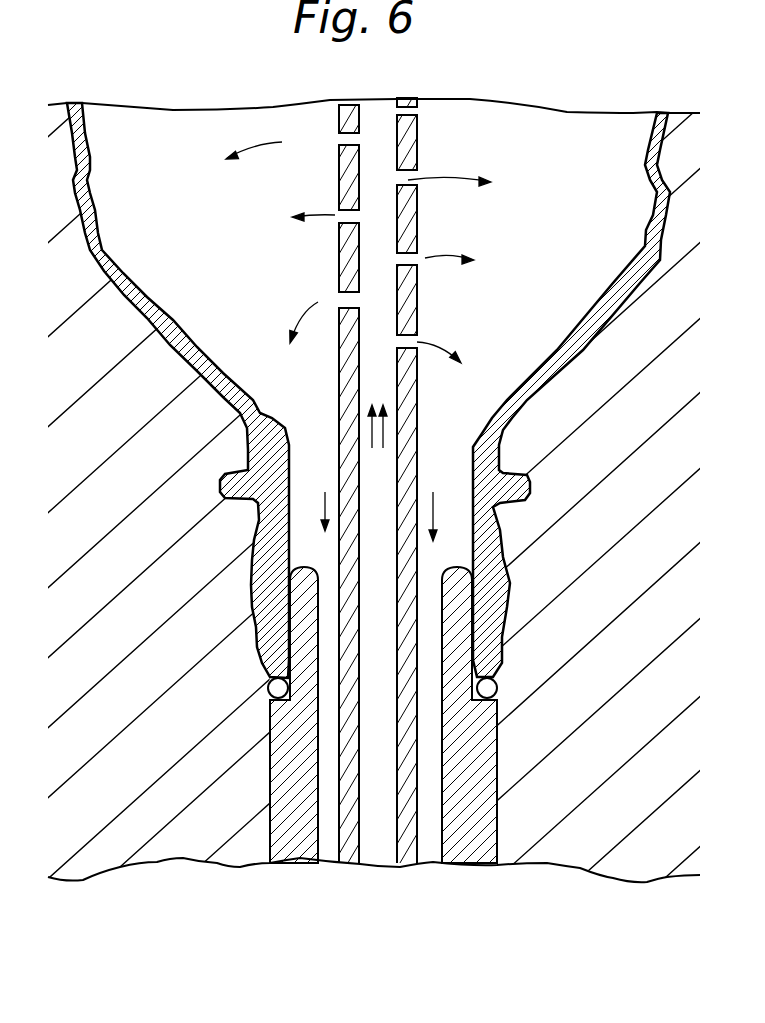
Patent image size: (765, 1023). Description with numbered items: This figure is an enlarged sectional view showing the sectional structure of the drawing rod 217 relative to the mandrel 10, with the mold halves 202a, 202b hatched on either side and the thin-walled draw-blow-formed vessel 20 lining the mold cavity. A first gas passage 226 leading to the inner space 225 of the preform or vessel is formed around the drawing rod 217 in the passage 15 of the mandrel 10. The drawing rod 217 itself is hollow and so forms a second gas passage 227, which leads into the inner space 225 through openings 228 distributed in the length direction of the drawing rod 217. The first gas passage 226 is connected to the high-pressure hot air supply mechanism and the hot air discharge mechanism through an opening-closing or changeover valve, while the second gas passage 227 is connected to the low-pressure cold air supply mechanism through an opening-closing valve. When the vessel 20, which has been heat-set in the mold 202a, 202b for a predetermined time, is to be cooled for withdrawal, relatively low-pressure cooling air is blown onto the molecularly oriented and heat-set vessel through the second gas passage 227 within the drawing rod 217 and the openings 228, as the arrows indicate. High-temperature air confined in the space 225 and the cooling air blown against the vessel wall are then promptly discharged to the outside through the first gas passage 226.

The mandrel 10 is at (353, 757).
The passage of the mandrel 15 is at (327, 867).
The draw-blow-formed vessel 20 is at (520, 427).
The drawing rod 217 is at (338, 332).
The inner space of the preform or vessel 225 is at (543, 226).
The first gas passage 226 is at (430, 867).
The second gas passage 227 is at (382, 867).
The openings 228 is at (403, 343).
The mold 202a is at (160, 569).
The mold 202b is at (648, 569).